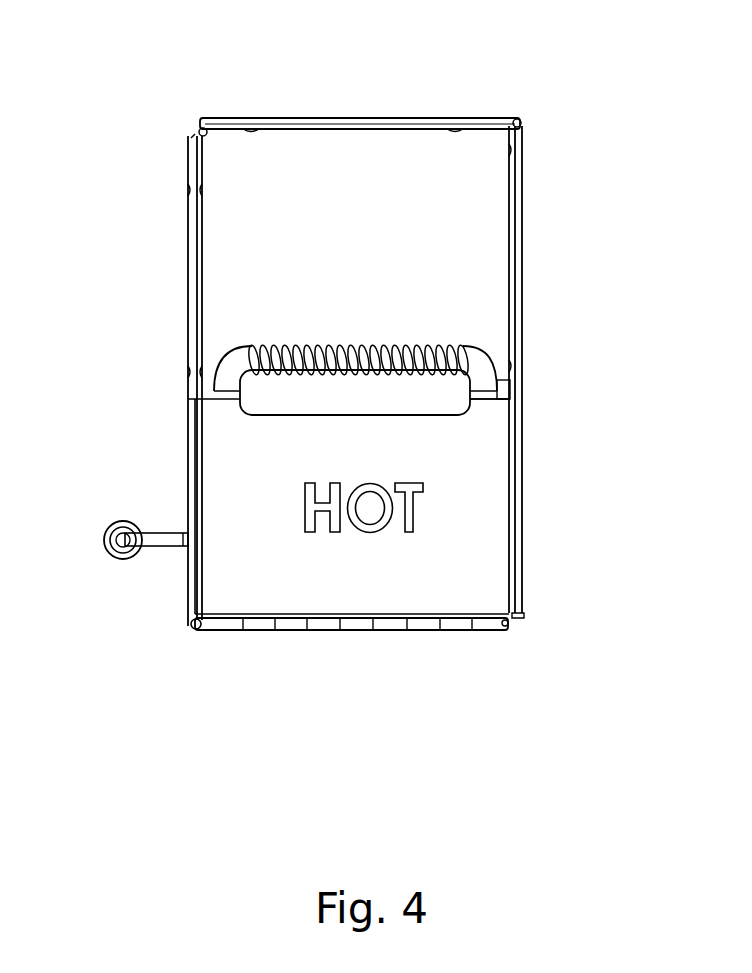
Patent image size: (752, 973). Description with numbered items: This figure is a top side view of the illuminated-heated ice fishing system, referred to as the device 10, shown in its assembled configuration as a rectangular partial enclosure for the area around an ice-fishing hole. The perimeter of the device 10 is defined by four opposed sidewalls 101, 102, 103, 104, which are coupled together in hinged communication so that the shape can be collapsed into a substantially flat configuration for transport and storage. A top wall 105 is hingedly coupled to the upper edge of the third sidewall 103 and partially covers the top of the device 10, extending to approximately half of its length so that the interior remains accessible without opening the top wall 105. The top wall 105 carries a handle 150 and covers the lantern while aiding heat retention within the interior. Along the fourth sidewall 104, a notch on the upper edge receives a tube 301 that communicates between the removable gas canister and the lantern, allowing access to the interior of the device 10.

The device 10 is at (138, 62).
The first sidewall 101 is at (344, 119).
The second sidewall 102 is at (523, 310).
The third sidewall 103 is at (490, 630).
The fourth sidewall 104 is at (190, 340).
The top wall 105 is at (470, 503).
The handle 150 is at (515, 385).
The tube 301 is at (150, 534).